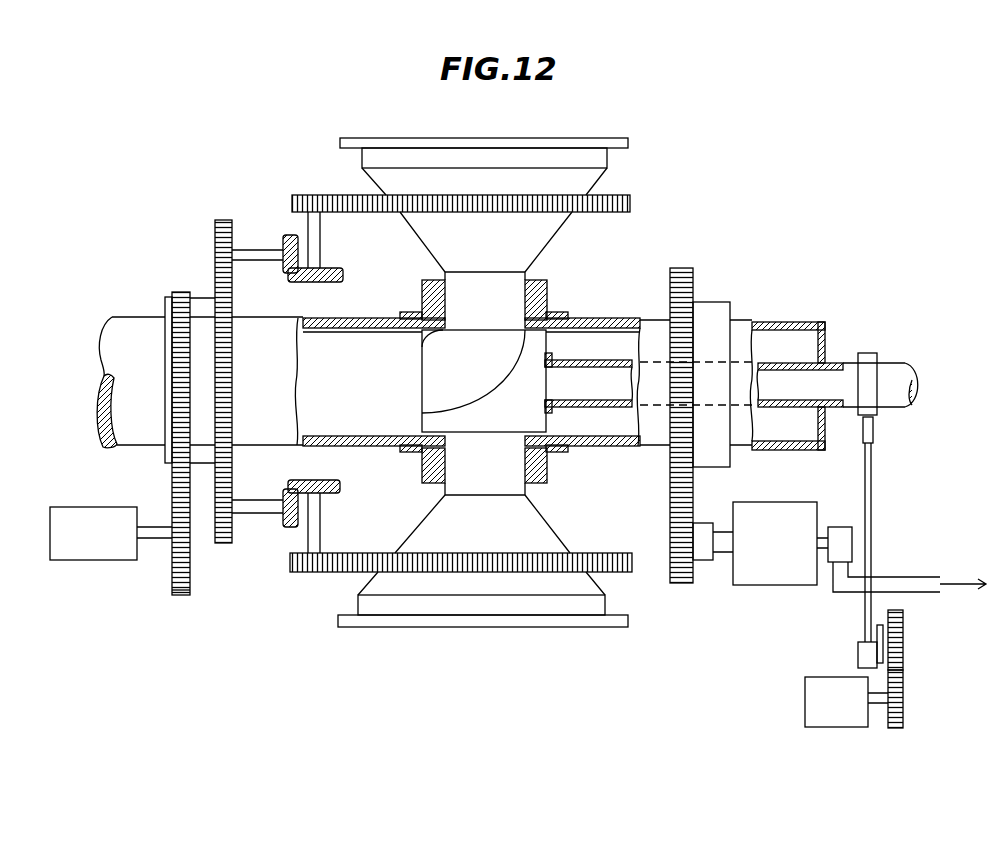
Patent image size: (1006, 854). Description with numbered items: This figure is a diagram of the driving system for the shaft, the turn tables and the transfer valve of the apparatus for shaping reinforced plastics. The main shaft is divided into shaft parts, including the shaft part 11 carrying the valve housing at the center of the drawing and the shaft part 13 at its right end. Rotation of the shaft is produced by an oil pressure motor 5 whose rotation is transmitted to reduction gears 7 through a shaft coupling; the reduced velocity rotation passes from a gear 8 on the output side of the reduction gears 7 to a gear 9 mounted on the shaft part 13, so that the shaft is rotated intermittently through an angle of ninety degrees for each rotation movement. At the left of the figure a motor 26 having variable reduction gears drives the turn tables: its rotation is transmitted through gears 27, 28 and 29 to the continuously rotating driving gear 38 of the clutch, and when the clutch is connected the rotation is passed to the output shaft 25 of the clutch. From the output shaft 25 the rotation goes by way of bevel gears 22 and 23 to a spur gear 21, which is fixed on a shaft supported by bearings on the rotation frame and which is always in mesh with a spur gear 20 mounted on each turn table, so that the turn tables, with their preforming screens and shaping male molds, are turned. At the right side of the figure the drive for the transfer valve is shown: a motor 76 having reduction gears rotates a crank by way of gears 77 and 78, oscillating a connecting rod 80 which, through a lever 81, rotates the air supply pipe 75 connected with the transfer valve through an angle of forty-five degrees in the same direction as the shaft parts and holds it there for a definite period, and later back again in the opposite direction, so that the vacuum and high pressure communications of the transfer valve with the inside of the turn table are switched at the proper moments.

The circular position-fixing plate 11 is at (385, 447).
The air cylinder 13 is at (800, 320).
The oil pressure motor 5 is at (853, 537).
The reduction gears 7 is at (768, 575).
The gear 8 is at (683, 577).
The gear 9 is at (682, 268).
The spur gear 20 is at (632, 203).
The spur gear 21 is at (307, 195).
The bevel gear 22 is at (317, 277).
The bevel gear 23 is at (285, 238).
The output shaft 25 is at (257, 262).
The motor 26 is at (83, 548).
The gear 27 is at (177, 597).
The gear 28 is at (178, 290).
The gear 29 is at (233, 452).
The driving gear 38 is at (229, 222).
The air supply pipe 75 is at (805, 362).
The motor 76 is at (828, 717).
The gear 77 is at (903, 712).
The gear 78 is at (902, 650).
The connecting rod 80 is at (870, 493).
The lever 81 is at (877, 352).